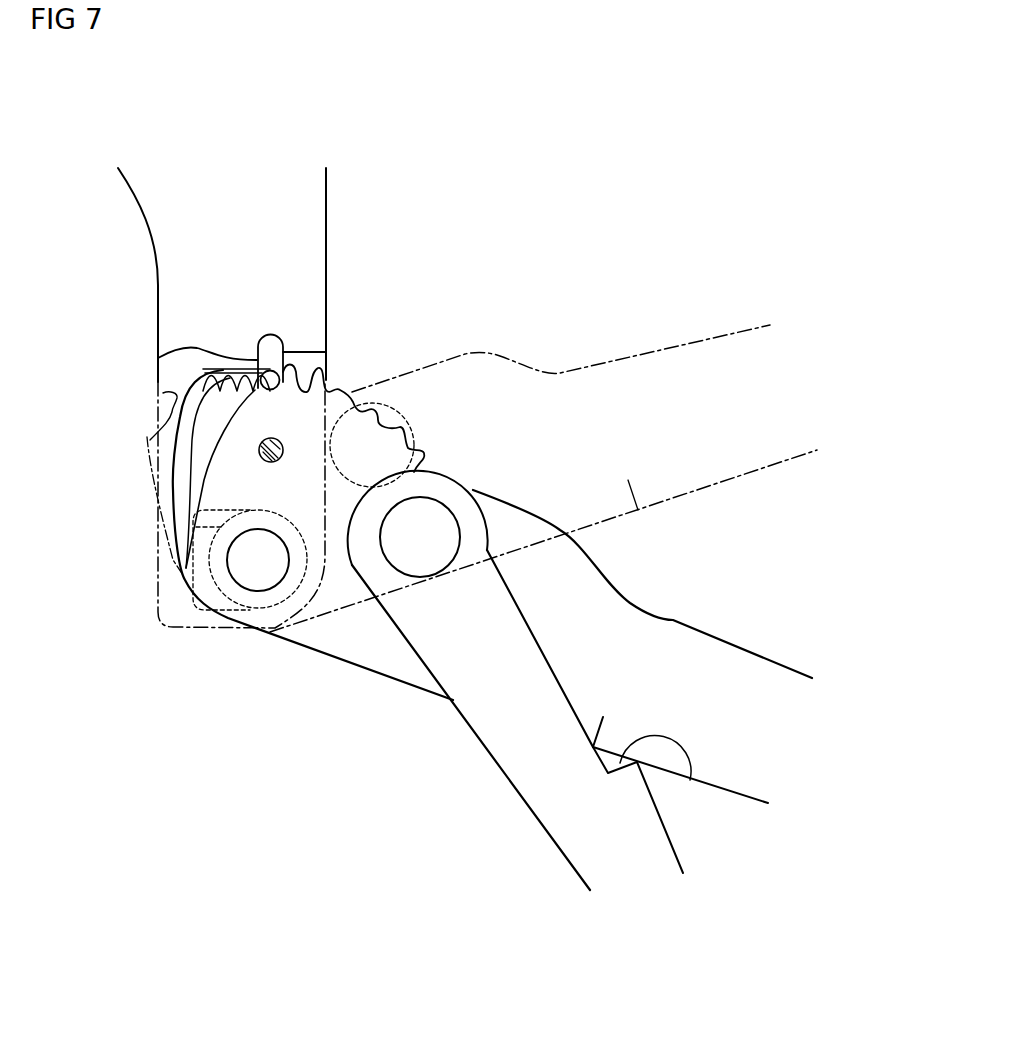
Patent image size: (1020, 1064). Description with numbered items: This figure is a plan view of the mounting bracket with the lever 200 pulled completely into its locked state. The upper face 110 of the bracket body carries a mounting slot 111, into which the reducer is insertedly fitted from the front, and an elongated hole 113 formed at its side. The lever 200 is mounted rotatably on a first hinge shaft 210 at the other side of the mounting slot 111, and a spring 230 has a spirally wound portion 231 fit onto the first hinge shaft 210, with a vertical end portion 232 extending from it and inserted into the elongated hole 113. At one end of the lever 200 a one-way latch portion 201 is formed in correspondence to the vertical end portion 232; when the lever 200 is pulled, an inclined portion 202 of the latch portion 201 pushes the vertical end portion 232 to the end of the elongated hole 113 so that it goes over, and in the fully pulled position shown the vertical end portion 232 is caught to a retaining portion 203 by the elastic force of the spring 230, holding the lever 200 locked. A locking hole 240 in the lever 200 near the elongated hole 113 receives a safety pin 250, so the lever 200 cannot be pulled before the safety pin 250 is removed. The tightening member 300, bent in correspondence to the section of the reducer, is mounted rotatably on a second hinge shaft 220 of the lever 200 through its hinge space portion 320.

The upper face 110 is at (300, 230).
The mounting slot 111 is at (157, 320).
The elongated hole 113 is at (257, 347).
The lever 200 is at (712, 657).
The one-way latch portion 201 is at (373, 284).
The inclined portion 202 is at (308, 388).
The retaining portion 203 is at (333, 387).
The first hinge shaft 210 is at (253, 570).
The second hinge shaft 220 is at (417, 555).
The spring 230 is at (178, 470).
The spirally wound portion 231 is at (290, 597).
The vertical end portion 232 is at (252, 386).
The locking hole 240 is at (265, 462).
The safety pin 250 is at (260, 441).
The tightening member 300 is at (520, 770).
The hinge space portion 320 is at (690, 780).